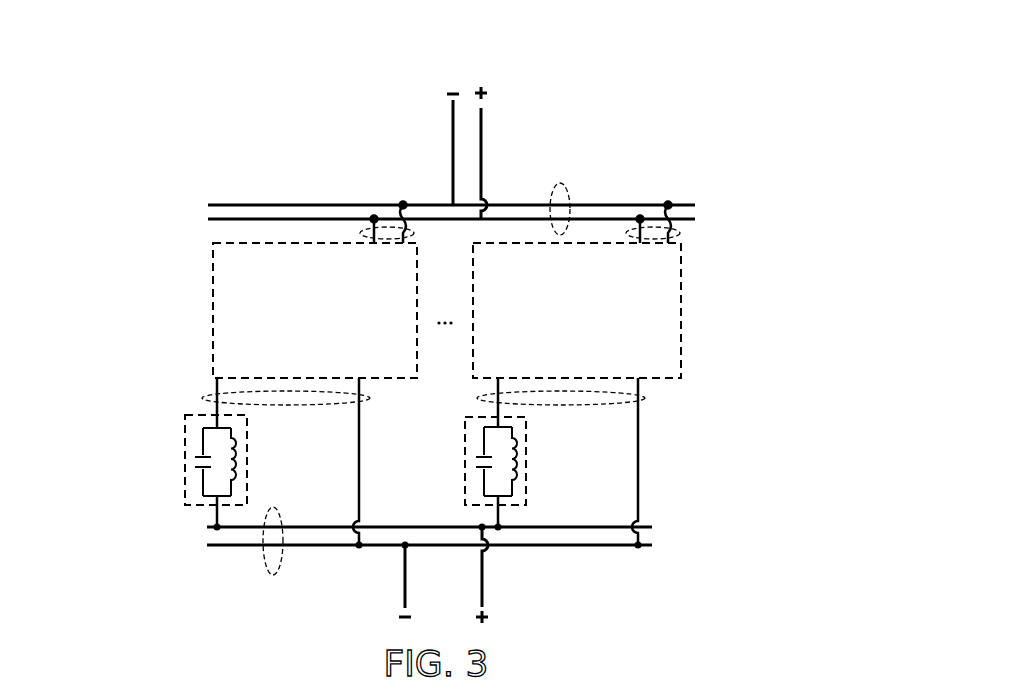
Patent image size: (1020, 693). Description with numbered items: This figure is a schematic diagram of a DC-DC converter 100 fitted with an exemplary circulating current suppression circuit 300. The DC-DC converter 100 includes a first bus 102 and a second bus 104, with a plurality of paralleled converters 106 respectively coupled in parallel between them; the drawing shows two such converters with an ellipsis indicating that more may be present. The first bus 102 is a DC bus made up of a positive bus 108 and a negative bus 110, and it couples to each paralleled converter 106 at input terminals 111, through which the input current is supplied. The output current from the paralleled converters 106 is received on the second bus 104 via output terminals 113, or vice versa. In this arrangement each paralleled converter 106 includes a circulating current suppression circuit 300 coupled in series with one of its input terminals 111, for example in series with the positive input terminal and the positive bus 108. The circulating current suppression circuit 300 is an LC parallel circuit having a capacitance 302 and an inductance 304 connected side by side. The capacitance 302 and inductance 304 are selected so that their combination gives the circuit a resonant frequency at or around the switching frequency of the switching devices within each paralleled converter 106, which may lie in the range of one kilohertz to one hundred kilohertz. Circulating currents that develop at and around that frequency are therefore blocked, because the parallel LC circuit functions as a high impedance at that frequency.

The DC-DC converter 100 is at (349, 78).
The first bus 102 is at (429, 565).
The second bus 104 is at (562, 182).
The paralleled converters 106 is at (210, 313).
The positive bus 108 is at (617, 528).
The negative bus 110 is at (555, 546).
The input terminals 111 is at (205, 398).
The output terminals 113 is at (410, 233).
The circulating current suppression circuit 300 is at (354, 466).
The capacitance 302 is at (200, 450).
The inductance 304 is at (240, 470).